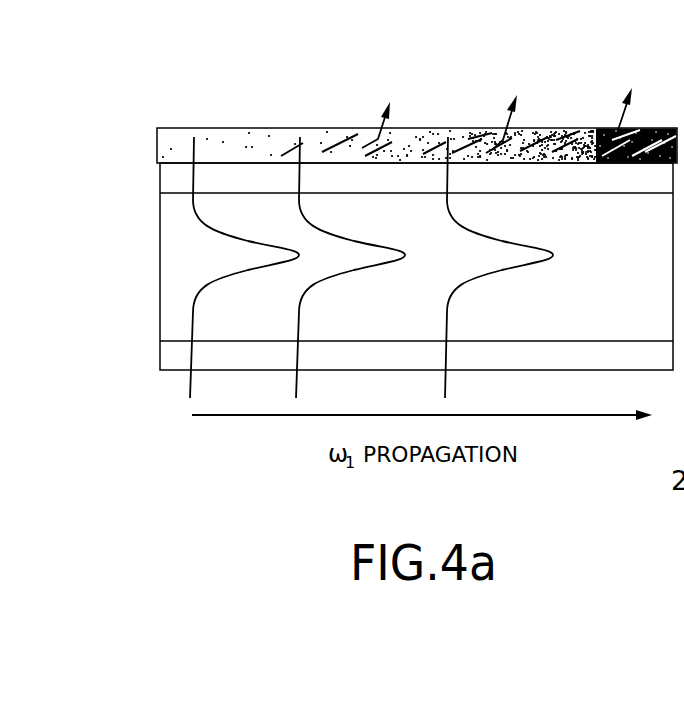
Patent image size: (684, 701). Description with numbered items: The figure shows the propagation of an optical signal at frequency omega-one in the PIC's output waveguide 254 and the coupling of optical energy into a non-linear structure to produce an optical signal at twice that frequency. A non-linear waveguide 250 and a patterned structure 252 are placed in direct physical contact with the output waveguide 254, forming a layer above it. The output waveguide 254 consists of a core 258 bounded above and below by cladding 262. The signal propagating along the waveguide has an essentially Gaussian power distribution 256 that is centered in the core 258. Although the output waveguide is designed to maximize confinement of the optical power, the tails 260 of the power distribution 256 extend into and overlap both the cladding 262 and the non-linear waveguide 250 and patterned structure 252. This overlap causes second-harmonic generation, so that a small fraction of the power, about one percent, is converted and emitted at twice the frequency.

The non-linear waveguide 250 is at (263, 150).
The patterned structure 252 is at (338, 148).
The output waveguide 254 is at (146, 165).
The Gaussian power distribution 256 is at (213, 290).
The core 258 is at (638, 272).
The tails 260 is at (175, 146).
The cladding 262 is at (416, 267).